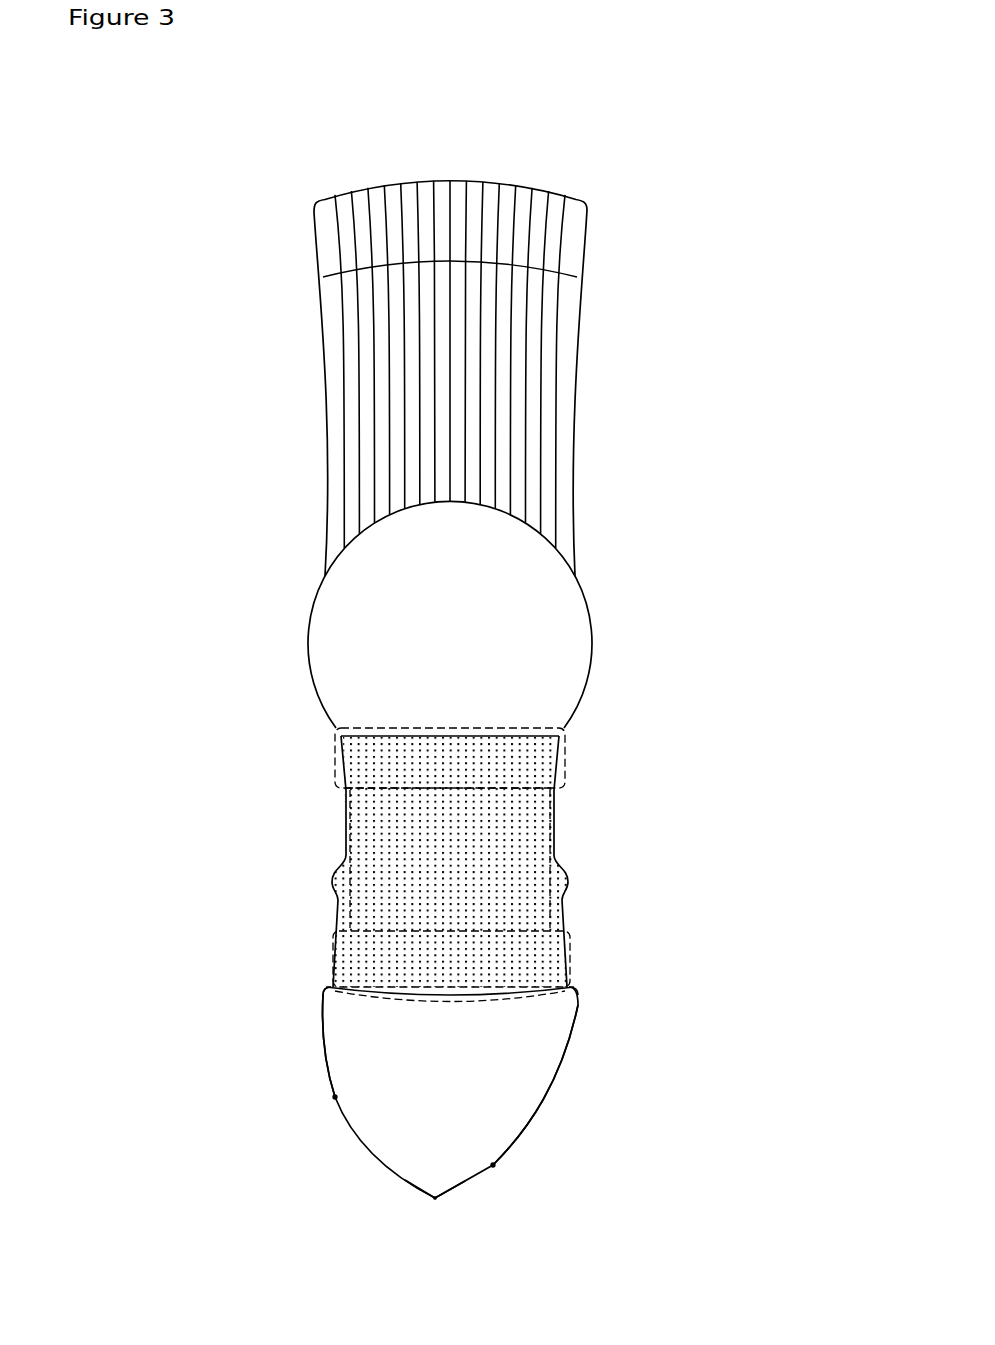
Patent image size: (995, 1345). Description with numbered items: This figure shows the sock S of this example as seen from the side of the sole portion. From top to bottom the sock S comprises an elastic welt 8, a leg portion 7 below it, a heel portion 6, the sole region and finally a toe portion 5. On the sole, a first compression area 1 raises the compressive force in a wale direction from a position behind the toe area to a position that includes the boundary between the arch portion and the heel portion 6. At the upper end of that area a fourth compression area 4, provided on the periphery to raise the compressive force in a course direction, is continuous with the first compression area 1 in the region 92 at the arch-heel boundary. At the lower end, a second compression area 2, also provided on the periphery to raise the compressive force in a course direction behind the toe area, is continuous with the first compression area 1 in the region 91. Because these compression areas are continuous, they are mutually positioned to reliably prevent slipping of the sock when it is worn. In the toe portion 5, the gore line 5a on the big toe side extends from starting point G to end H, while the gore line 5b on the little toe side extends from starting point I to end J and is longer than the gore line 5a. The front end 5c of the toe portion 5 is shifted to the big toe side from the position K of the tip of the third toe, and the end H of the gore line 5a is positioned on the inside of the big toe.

The sock S is at (566, 177).
The elastic welt 8 is at (339, 207).
The leg portion 7 is at (343, 373).
The heel portion 6 is at (573, 618).
The fourth compression area 4 is at (563, 756).
The region where the first and fourth compression areas are continuous 92 is at (347, 761).
The first compression area 1 is at (557, 831).
The region where the first and second compression areas are continuous 91 is at (333, 950).
The second compression area 2 is at (568, 943).
The toe portion 5 is at (393, 1148).
The gore line on the side of the big toe 5a is at (324, 1043).
The gore line on the side of the little toe 5b is at (563, 1068).
The front end of the toe portion 5c is at (437, 1200).
The starting point of gore line 5a G is at (321, 985).
The end of gore line 5a H is at (330, 1100).
The starting point of gore line 5b I is at (581, 985).
The end of gore line 5b J is at (497, 1168).
The position of the tip of the third toe K is at (457, 1212).